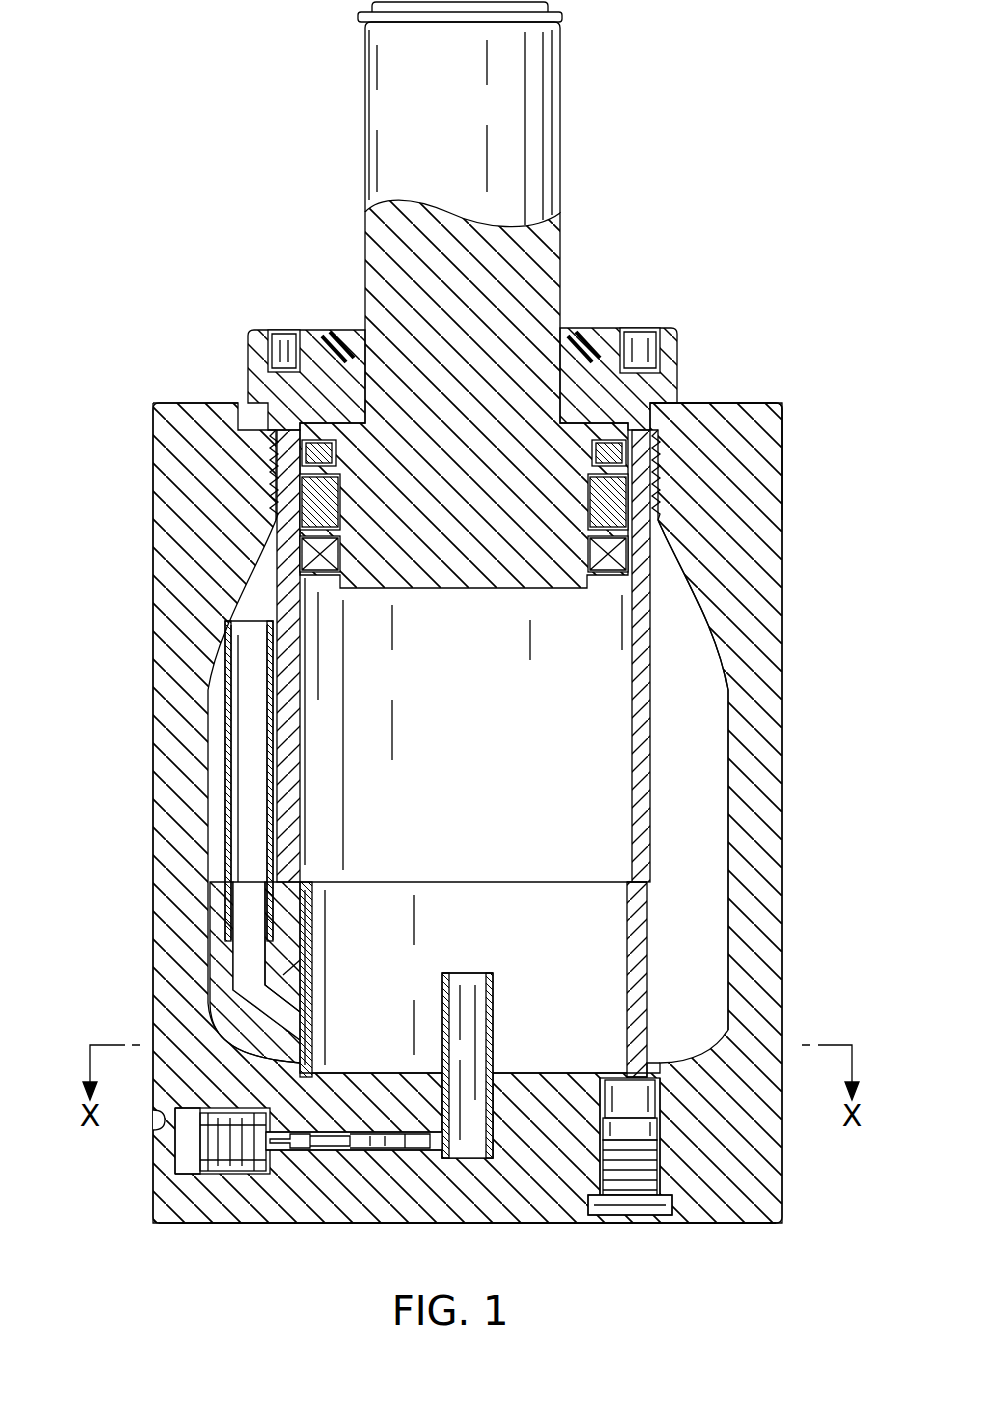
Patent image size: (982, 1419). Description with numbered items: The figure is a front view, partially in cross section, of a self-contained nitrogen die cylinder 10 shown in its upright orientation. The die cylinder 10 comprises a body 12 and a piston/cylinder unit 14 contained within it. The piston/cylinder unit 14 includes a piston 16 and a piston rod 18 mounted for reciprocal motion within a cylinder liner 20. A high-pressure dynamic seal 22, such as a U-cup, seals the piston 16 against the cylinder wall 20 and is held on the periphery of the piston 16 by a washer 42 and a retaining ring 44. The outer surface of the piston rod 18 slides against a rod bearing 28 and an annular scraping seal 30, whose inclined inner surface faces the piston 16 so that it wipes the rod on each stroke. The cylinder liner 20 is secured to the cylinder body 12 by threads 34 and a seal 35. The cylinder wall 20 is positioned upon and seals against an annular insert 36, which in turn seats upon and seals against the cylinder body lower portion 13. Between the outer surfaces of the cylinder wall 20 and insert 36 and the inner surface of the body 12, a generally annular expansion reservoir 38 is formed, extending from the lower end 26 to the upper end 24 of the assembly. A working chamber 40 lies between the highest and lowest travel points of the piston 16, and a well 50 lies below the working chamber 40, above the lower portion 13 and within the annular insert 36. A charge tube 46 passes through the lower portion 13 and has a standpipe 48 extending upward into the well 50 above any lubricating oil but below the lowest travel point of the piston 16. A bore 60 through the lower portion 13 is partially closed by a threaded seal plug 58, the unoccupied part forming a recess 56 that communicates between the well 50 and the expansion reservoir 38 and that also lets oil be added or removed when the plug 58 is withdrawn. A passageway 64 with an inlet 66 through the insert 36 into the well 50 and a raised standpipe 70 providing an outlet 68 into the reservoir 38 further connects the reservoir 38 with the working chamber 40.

The self-contained nitrogen die cylinder 10 is at (132, 215).
The cylinder body 12 is at (152, 511).
The cylinder body lower portion 13 is at (395, 1198).
The piston/cylinder unit 14 is at (650, 657).
The piston 16 is at (432, 588).
The piston rod 18 is at (562, 184).
The cylinder liner 20 is at (306, 762).
The high-pressure dynamic seal 22 is at (650, 548).
The upper end 24 is at (762, 402).
The lower end 26 is at (730, 1226).
The rod bearing 28 is at (597, 394).
The annular scraping seal 30 is at (582, 330).
The threads 34 is at (268, 456).
The seal 35 is at (262, 396).
The annular insert 36 is at (650, 945).
The expansion reservoir 38 is at (668, 816).
The working chamber 40 is at (453, 786).
The washer 42 is at (610, 584).
The retaining ring 44 is at (328, 586).
The charge tube 46 is at (210, 1152).
The standpipe 48 is at (496, 976).
The well 50 is at (525, 1028).
The recess 56 is at (645, 1093).
The seal plug 58 is at (625, 1130).
The bore 60 is at (662, 1126).
The passageway 64 is at (286, 968).
The inlet 66 is at (312, 988).
The outlet 68 is at (240, 628).
The raised standpipe 70 is at (228, 731).